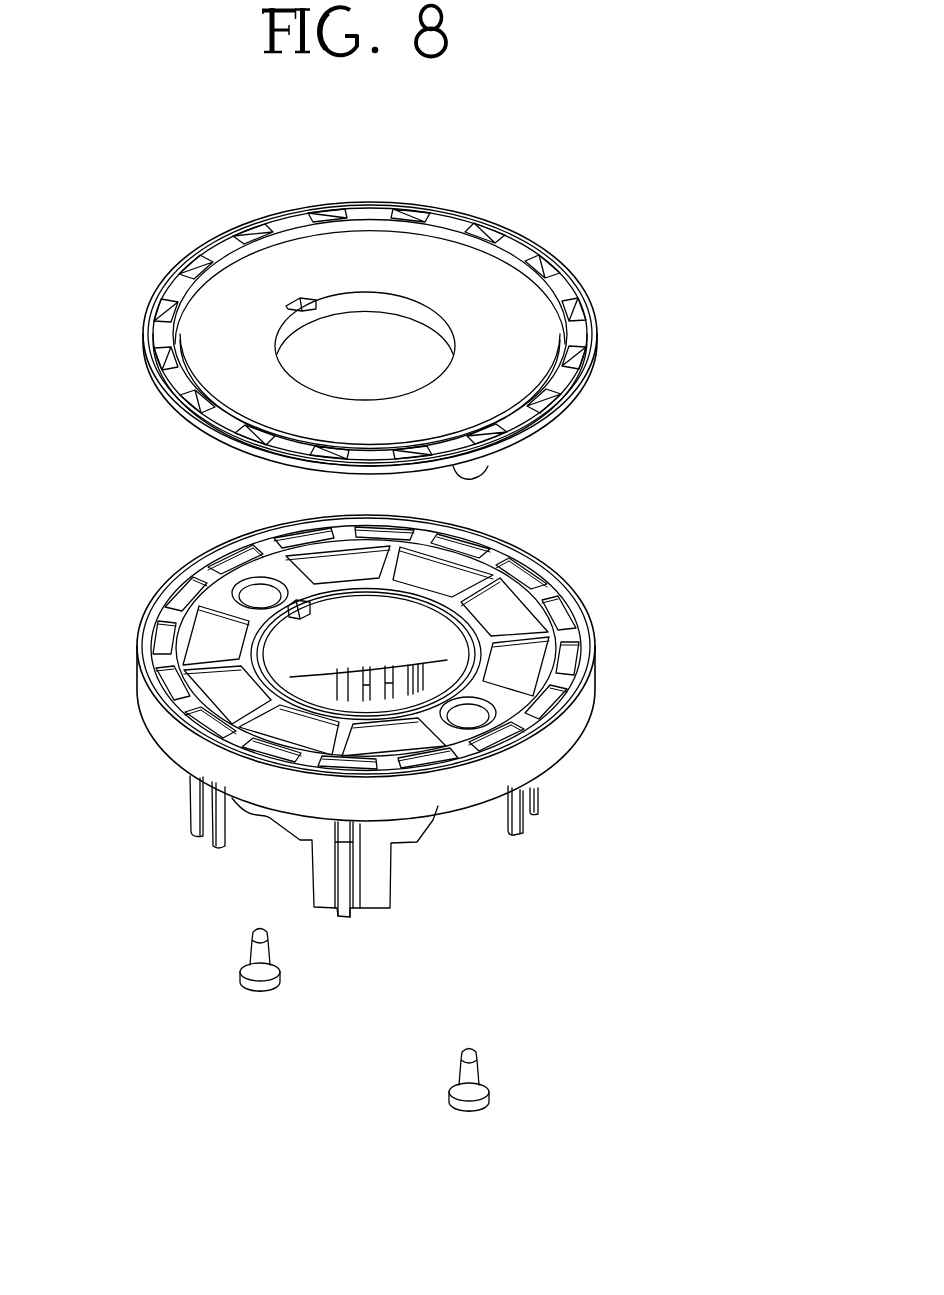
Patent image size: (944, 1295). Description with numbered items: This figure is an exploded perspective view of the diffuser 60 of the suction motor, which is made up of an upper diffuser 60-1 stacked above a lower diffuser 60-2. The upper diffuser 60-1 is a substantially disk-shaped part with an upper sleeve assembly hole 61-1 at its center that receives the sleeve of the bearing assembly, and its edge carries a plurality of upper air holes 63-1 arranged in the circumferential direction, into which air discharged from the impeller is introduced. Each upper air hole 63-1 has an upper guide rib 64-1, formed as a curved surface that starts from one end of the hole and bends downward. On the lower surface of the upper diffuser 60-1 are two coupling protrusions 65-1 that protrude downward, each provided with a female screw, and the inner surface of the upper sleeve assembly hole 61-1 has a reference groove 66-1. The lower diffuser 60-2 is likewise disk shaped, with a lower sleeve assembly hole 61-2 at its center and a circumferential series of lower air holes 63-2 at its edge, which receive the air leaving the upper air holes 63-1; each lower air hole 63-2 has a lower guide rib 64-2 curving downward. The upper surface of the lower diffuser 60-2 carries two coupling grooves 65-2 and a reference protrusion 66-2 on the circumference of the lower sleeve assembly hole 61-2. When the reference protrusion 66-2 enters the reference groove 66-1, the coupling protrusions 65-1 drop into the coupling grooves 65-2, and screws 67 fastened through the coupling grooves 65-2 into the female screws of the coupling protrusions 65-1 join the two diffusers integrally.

The diffuser 60 is at (656, 314).
The upper diffuser 60-1 is at (580, 265).
The lower diffuser 60-2 is at (607, 594).
The upper sleeve assembly hole 61-1 is at (397, 318).
The lower sleeve assembly hole 61-2 is at (303, 647).
The upper air holes 63-1 is at (517, 252).
The lower air holes 63-2 is at (550, 577).
The upper guide rib 64-1 is at (283, 227).
The lower guide rib 64-2 is at (487, 527).
The coupling protrusions 65-1 is at (500, 462).
The coupling grooves 65-2 is at (255, 587).
The reference groove 66-1 is at (303, 297).
The reference protrusion 66-2 is at (303, 607).
The screws 67 is at (265, 953).